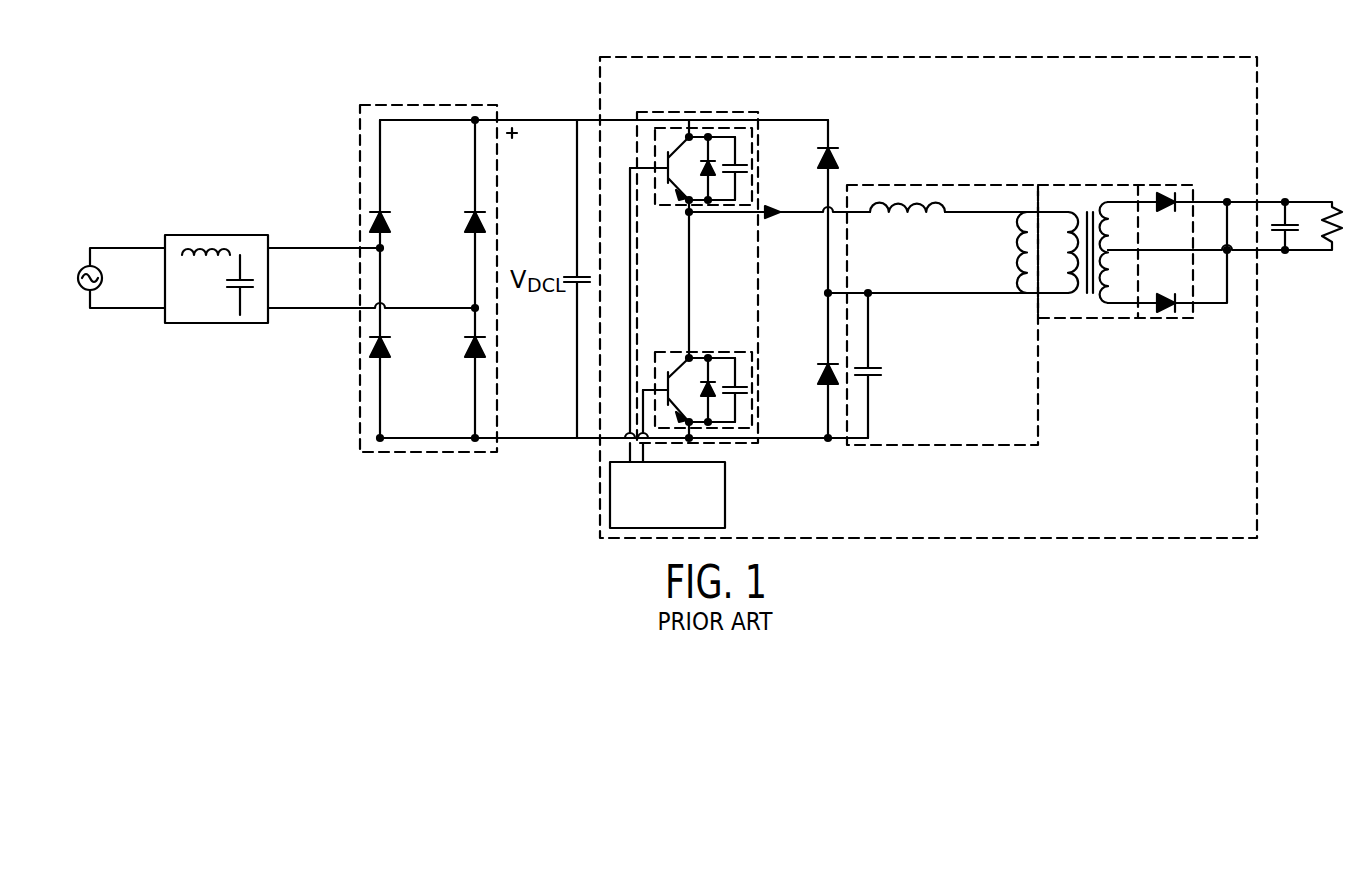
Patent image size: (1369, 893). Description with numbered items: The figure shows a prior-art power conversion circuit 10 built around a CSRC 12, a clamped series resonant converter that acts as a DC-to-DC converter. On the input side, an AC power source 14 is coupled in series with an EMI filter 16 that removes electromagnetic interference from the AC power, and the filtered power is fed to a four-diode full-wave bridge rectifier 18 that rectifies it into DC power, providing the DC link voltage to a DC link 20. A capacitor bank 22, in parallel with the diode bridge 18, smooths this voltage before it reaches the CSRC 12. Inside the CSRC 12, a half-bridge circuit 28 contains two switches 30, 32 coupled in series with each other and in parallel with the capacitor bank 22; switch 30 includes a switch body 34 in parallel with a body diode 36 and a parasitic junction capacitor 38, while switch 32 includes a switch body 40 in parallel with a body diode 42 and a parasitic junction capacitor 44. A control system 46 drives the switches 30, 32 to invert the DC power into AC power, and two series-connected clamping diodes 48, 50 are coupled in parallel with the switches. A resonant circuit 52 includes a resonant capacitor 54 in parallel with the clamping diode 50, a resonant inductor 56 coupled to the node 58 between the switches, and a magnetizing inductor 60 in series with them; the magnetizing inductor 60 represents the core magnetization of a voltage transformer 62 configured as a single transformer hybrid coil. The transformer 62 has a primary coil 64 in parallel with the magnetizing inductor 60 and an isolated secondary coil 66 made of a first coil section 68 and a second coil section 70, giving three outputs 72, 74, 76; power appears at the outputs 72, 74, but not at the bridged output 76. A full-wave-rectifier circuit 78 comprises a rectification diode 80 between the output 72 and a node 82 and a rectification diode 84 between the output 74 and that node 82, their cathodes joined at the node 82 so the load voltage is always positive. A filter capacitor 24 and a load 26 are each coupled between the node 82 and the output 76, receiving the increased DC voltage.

The power conversion circuit 10 is at (245, 118).
The CSRC 12 is at (930, 56).
The AC power source 14 is at (83, 268).
The electromagnetic interference (EMI) filter 16 is at (213, 235).
The four-diode full-wave bridge rectifier 18 is at (428, 106).
The DC link 20 is at (532, 120).
The capacitor bank 22 is at (570, 277).
The filter capacitor 24 is at (1290, 233).
The load 26 is at (1334, 208).
The half-bridge circuit 28 is at (697, 112).
The switch 30 is at (670, 128).
The switch 32 is at (670, 352).
The switch body 34 is at (668, 152).
The body diode 36 is at (712, 185).
The parasitic junction capacitor 38 is at (740, 165).
The switch body 40 is at (668, 372).
The body diode 42 is at (710, 378).
The parasitic junction capacitor 44 is at (740, 387).
The control system 46 is at (725, 498).
The clamping diode 48 is at (832, 148).
The clamping diode 50 is at (822, 372).
The resonant circuit 52 is at (942, 185).
The resonant capacitor 54 is at (876, 378).
The resonant inductor 56 is at (898, 212).
The node 58 is at (689, 213).
The magnetizing inductor 60 is at (1020, 243).
The voltage transformer 62 is at (1048, 185).
The primary coil 64 is at (1063, 293).
The secondary coil 66 is at (1095, 190).
The first coil section 68 is at (1098, 203).
The second coil section 70 is at (1103, 302).
The output 72 is at (1128, 202).
The output 74 is at (1120, 303).
The output 76 is at (1122, 252).
The full-wave-rectifier circuit 78 is at (1162, 190).
The rectification diode 80 is at (1177, 210).
The node 82 is at (1226, 200).
The rectification diode 84 is at (1165, 313).